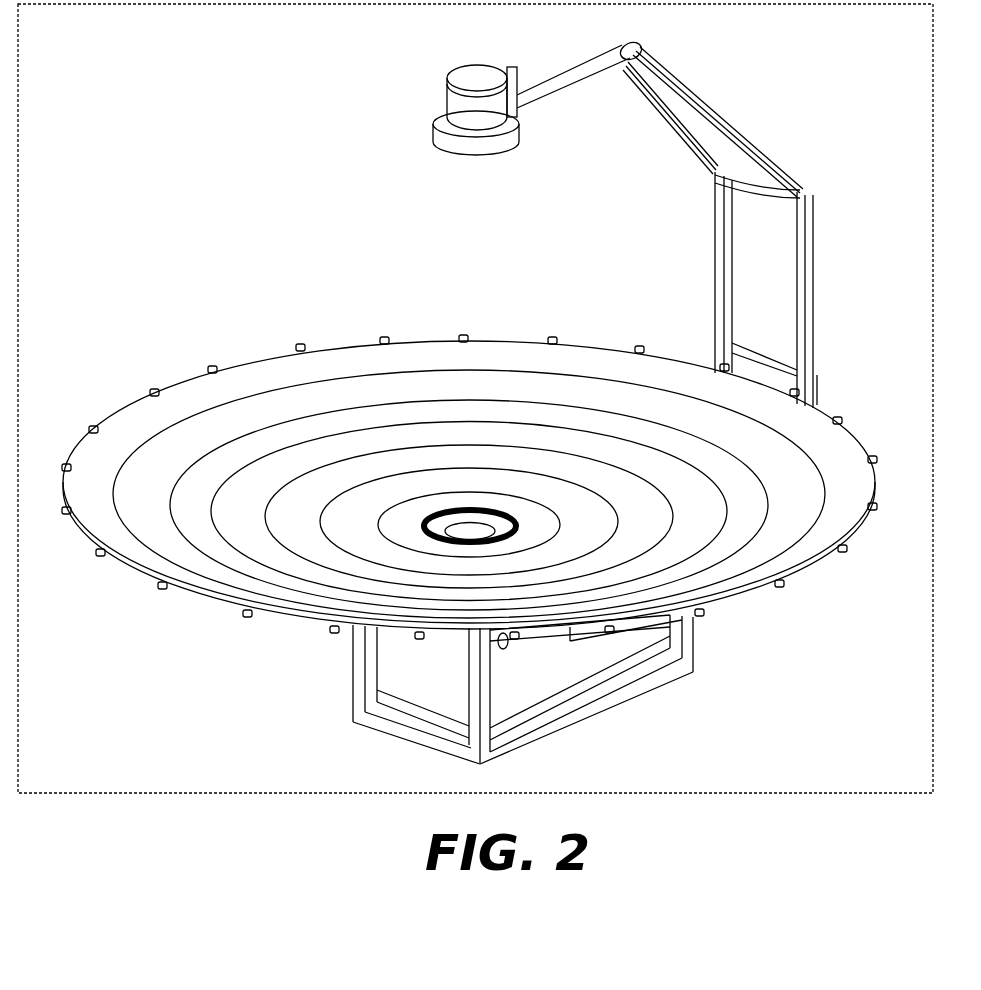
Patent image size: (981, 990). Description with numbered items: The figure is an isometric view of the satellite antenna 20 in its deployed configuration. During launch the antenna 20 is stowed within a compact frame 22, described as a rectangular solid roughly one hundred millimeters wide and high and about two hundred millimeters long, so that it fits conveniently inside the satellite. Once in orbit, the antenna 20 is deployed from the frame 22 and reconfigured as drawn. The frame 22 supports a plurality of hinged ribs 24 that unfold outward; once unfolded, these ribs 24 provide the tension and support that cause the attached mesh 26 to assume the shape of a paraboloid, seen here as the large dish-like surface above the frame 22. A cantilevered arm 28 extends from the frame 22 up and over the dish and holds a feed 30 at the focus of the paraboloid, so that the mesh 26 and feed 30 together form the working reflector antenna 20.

The antenna 20 is at (70, 52).
The frame 22 is at (347, 670).
The hinged ribs 24 is at (185, 597).
The mesh 26 is at (308, 350).
The cantilevered arm 28 is at (763, 143).
The feed 30 is at (433, 130).